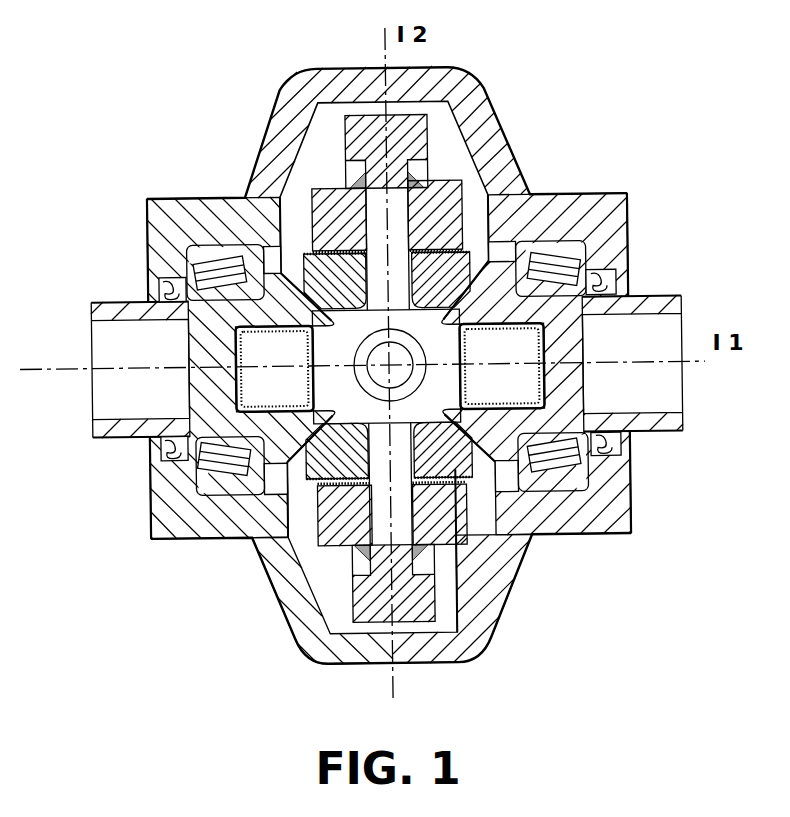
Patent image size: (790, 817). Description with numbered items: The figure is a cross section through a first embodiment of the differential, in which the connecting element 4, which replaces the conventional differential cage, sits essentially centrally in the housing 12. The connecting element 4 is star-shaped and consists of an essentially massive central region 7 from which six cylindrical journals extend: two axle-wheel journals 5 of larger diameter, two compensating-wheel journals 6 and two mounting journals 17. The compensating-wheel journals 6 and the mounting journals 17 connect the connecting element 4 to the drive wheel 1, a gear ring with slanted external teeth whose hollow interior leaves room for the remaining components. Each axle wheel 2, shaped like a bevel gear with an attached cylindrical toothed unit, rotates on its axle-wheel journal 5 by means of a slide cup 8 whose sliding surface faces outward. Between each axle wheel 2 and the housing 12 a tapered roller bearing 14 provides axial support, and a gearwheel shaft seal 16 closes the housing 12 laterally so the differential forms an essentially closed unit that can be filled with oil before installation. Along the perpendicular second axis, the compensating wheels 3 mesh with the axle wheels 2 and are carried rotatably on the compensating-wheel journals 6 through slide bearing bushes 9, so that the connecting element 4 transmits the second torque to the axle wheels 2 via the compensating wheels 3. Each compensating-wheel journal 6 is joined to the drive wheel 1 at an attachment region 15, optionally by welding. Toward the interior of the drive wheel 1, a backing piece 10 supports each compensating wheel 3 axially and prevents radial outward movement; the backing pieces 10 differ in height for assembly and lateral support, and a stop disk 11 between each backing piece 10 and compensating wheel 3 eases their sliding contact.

The drive wheel 1 is at (358, 125).
The axle wheel 2 is at (220, 418).
The compensating wheel 3 is at (318, 262).
The connecting element 4 is at (434, 316).
The axle-wheel journal 5 is at (292, 382).
The compensating-wheel journal 6 is at (380, 232).
The central region 7 is at (348, 338).
The slide cup 8 is at (240, 350).
The slide bearing bush 9 is at (320, 490).
The backing piece 10 is at (443, 207).
The stop disk 11 is at (305, 473).
The housing 12 is at (305, 648).
The tapered roller bearing 14 is at (225, 466).
The attachment region 15 is at (404, 181).
The gearwheel shaft seal 16 is at (170, 277).
The mounting journal 17 is at (393, 373).